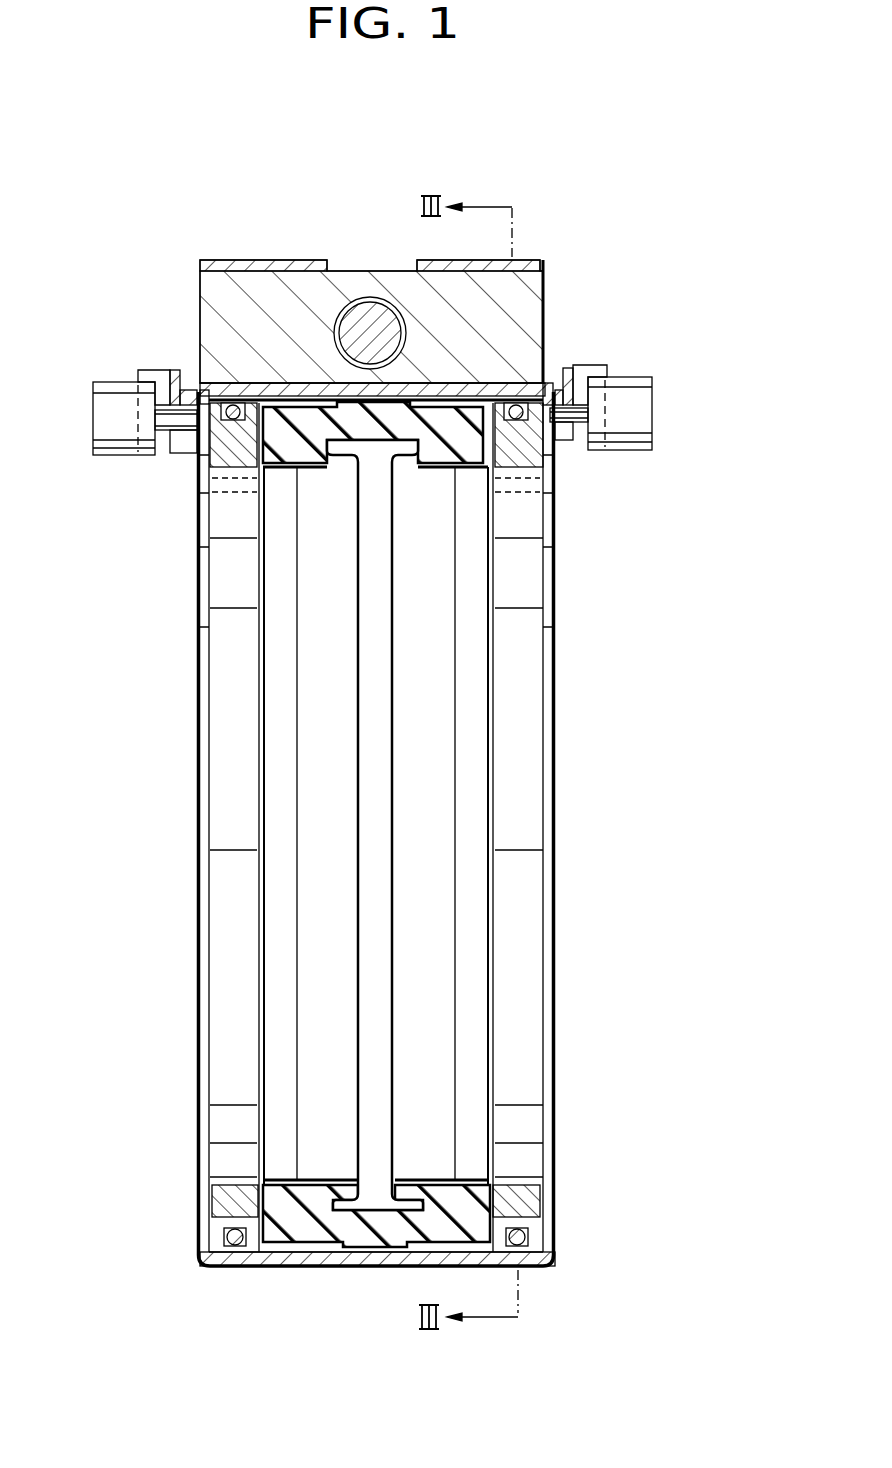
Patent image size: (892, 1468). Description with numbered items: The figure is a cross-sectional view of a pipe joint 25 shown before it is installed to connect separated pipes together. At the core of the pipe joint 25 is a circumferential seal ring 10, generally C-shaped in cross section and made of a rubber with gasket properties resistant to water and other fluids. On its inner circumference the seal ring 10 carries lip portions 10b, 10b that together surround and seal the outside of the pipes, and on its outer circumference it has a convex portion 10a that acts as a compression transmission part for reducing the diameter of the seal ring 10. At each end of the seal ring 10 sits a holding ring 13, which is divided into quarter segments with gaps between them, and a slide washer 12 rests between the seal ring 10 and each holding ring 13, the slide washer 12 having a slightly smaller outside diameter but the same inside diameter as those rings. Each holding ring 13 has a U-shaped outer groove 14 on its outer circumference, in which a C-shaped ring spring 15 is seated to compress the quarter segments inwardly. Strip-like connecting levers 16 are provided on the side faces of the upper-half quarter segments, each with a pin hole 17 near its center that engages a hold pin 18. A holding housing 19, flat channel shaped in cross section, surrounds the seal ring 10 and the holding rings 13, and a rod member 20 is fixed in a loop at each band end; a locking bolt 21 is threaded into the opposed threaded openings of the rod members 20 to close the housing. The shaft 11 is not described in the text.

The seal ring 10 is at (312, 420).
The convex portion 10a is at (392, 397).
The lip portion 10b is at (345, 480).
The shaft 11 is at (368, 475).
The slide washer 12 is at (262, 440).
The holding ring 13 is at (237, 457).
The outer groove 14 is at (204, 393).
The ring spring 15 is at (192, 383).
The connecting lever 16 is at (137, 371).
The pin hole 17 is at (175, 372).
The hold pin 18 is at (160, 435).
The holding housing 19 is at (493, 390).
The rod member 20 is at (270, 290).
The locking bolt 21 is at (368, 317).
The pipe joint 25 is at (560, 250).